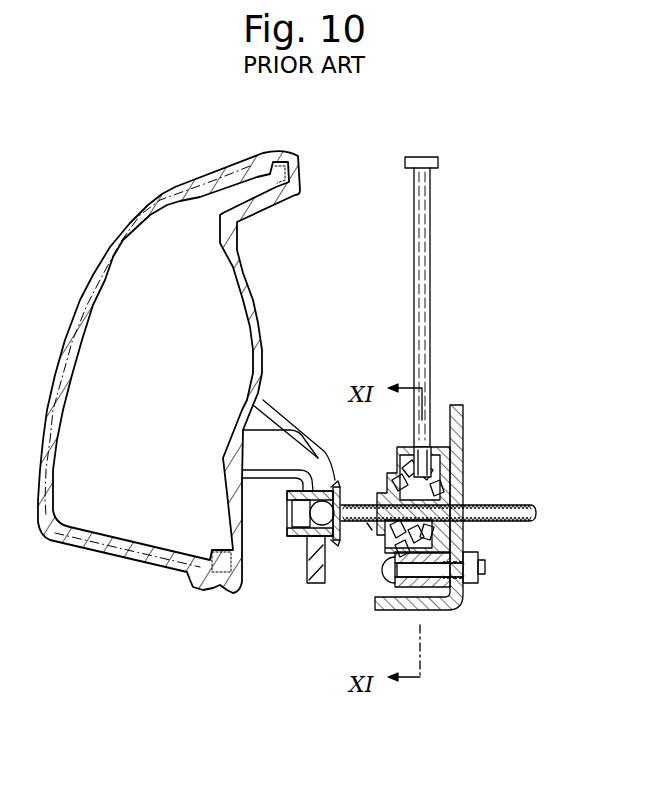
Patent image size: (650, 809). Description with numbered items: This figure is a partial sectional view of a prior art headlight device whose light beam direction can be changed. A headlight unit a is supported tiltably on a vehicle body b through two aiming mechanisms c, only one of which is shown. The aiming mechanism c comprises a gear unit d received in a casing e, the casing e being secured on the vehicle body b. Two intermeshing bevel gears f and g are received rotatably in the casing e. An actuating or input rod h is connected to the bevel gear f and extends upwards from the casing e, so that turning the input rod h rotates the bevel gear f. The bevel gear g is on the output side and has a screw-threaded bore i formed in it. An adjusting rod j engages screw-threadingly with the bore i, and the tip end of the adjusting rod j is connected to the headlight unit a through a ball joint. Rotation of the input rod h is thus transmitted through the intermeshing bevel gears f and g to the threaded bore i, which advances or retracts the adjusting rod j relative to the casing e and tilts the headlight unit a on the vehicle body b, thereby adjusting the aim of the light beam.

The headlight unit a is at (127, 222).
The vehicle body b is at (463, 408).
The aiming mechanism c is at (487, 489).
The gear unit d is at (390, 552).
The casing e is at (395, 540).
The bevel gear f is at (443, 490).
The bevel gear g is at (392, 477).
The actuating rod h is at (432, 212).
The screw-threaded bore i is at (367, 523).
The adjusting rod j is at (535, 505).